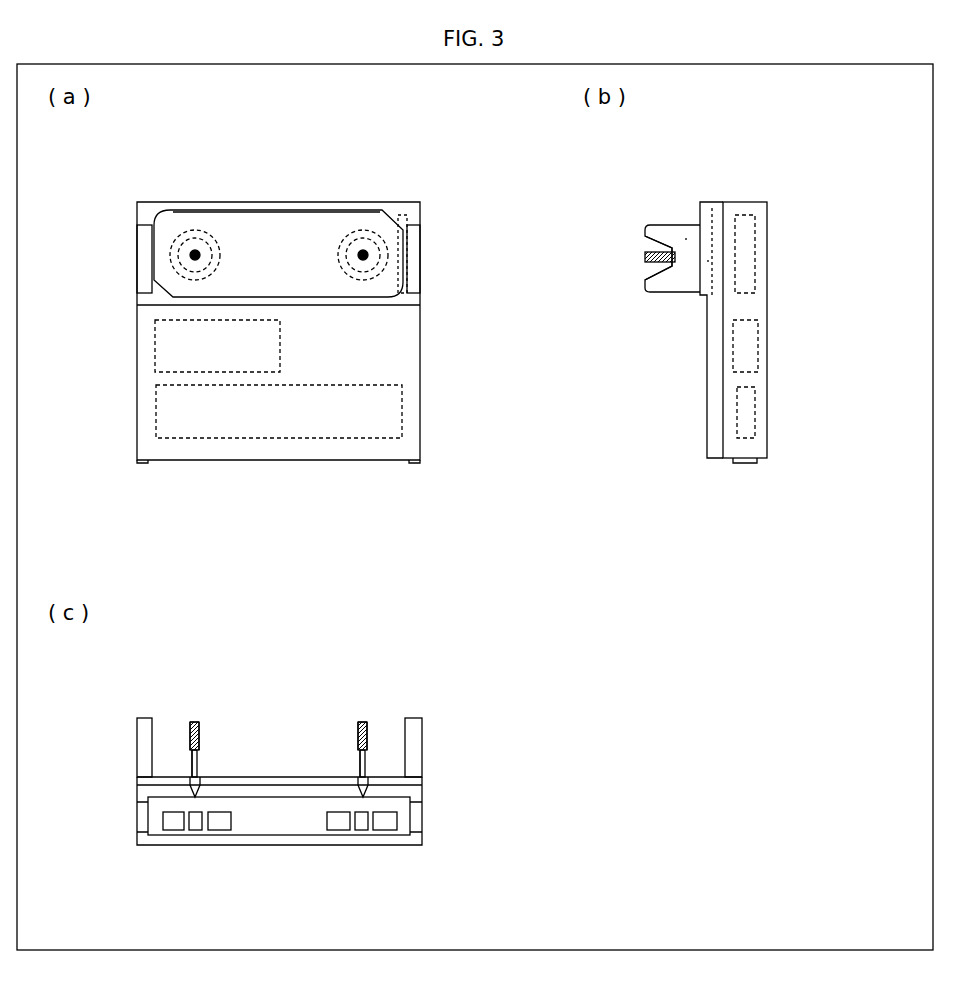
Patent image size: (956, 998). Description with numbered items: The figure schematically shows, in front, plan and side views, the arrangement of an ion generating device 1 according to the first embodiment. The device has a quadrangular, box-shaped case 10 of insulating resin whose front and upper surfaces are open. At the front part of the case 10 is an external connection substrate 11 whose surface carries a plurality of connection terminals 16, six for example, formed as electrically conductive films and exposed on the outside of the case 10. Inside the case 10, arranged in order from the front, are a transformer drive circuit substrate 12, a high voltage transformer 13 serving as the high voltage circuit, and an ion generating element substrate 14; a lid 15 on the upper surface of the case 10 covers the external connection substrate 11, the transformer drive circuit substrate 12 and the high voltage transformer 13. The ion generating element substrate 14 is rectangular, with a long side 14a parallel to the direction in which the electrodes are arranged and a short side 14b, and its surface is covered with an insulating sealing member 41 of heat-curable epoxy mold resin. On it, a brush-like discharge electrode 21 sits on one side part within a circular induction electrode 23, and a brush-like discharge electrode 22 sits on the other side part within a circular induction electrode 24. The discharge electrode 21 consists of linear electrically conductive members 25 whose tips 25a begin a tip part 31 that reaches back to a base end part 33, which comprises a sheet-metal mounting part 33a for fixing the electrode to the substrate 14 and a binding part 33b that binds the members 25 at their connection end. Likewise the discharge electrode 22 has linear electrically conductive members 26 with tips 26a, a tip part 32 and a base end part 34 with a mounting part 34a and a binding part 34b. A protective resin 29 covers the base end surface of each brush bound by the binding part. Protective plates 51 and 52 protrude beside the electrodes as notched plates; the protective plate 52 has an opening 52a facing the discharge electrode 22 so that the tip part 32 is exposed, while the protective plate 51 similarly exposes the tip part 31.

The ion generating device 1 is at (490, 152).
The case 10 is at (422, 395).
The external connection substrate 11 is at (281, 840).
The transformer drive circuit substrate 12 is at (157, 410).
The high voltage transformer 13 is at (157, 345).
The ion generating element substrate 14 is at (246, 222).
The long side 14a is at (280, 210).
The short side 14b is at (407, 255).
The lid 15 is at (420, 345).
The connection terminals 16 is at (220, 830).
The discharge electrode 21 is at (266, 116).
The discharge electrode 22 is at (434, 116).
The induction electrode 23 is at (199, 230).
The induction electrode 24 is at (362, 228).
The linear electrically conductive members 25 is at (191, 749).
The tips 25a is at (191, 740).
The linear electrically conductive members 26 is at (360, 749).
The tips 26a is at (360, 740).
The protective resin 29 is at (195, 777).
The tip part 31 is at (203, 252).
The tip part 32 is at (367, 252).
The base end part 33 is at (201, 250).
The mounting part 33a is at (197, 770).
The binding part 33b is at (198, 735).
The base end part 34 is at (369, 250).
The mounting part 34a is at (708, 262).
The binding part 34b is at (677, 320).
The insulating sealing member 41 is at (292, 254).
The protective plate 51 is at (137, 296).
The protective plate 52 is at (422, 296).
The opening 52a is at (645, 243).